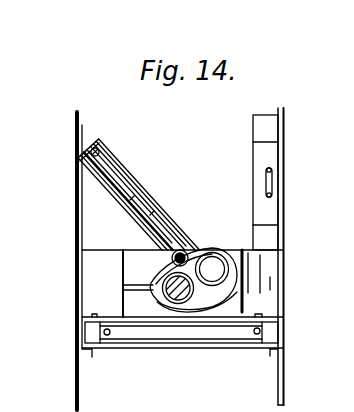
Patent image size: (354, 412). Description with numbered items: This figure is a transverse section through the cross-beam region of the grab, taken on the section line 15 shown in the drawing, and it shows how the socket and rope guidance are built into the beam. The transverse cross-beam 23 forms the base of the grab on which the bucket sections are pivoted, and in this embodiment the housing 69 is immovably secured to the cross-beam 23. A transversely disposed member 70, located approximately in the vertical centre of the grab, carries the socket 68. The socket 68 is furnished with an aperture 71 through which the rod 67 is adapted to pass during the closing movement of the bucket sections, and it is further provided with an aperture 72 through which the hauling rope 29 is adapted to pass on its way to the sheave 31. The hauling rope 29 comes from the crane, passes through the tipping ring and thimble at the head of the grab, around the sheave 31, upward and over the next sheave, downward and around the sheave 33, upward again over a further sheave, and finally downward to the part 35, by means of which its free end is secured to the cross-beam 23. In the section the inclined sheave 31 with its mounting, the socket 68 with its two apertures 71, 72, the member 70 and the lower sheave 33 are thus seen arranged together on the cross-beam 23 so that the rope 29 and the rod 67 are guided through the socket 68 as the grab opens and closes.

The section line 15- 15 is at (105, 288).
The cross-beam 23 is at (282, 195).
The hauling rope 29 is at (273, 170).
The sheave 31 is at (105, 172).
The sheave 33 is at (155, 332).
The part 35 is at (265, 152).
The rod 67 is at (181, 294).
The socket 68 is at (201, 300).
The housing 69 is at (128, 170).
The transversely disposed member 70 is at (268, 295).
The aperture 71 is at (213, 256).
The aperture 72 is at (186, 252).